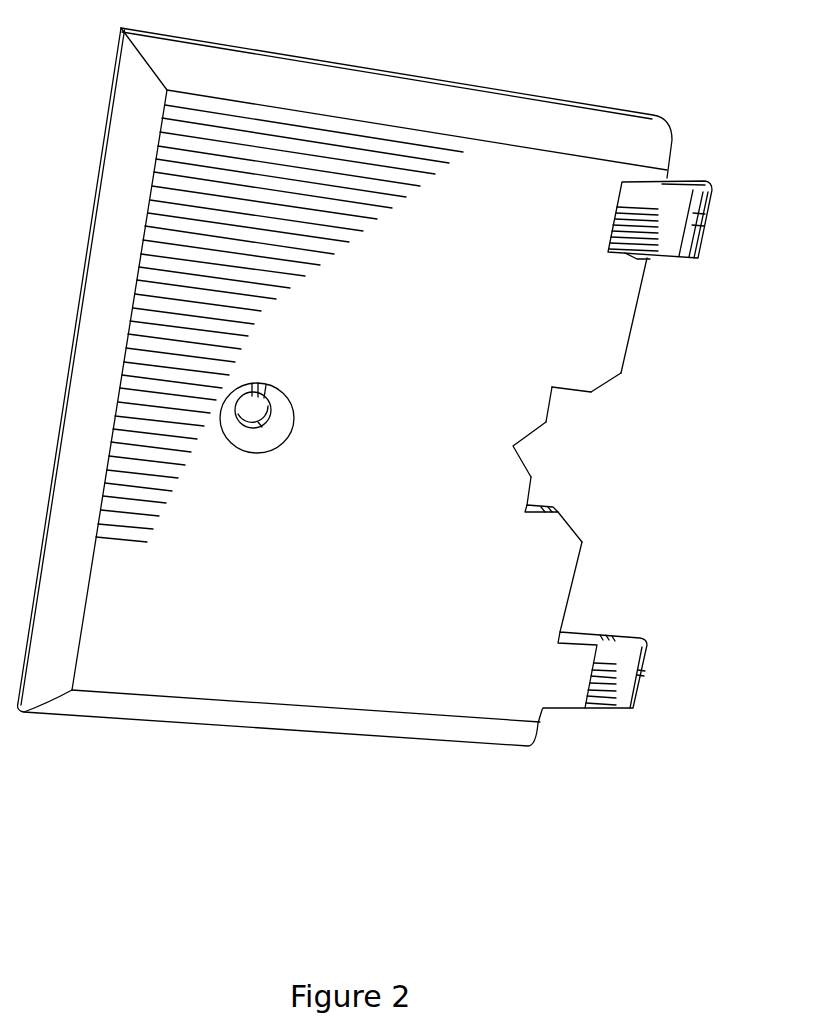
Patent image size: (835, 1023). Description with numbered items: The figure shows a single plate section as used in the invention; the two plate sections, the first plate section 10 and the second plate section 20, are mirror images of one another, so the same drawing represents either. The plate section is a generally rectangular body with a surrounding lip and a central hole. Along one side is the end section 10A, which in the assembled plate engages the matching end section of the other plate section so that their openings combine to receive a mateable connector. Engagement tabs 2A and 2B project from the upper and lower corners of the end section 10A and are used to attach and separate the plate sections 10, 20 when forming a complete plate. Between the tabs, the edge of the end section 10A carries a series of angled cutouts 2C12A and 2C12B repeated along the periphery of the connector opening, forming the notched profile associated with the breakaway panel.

The first plate section 10 is at (345, 446).
The second plate section 20 is at (160, 738).
The end section 10A is at (674, 302).
The engagement tab 2A is at (712, 192).
The engagement tab 2B is at (653, 652).
The angled cutout 2C12A is at (612, 382).
The angled cutout 2C12B is at (575, 393).